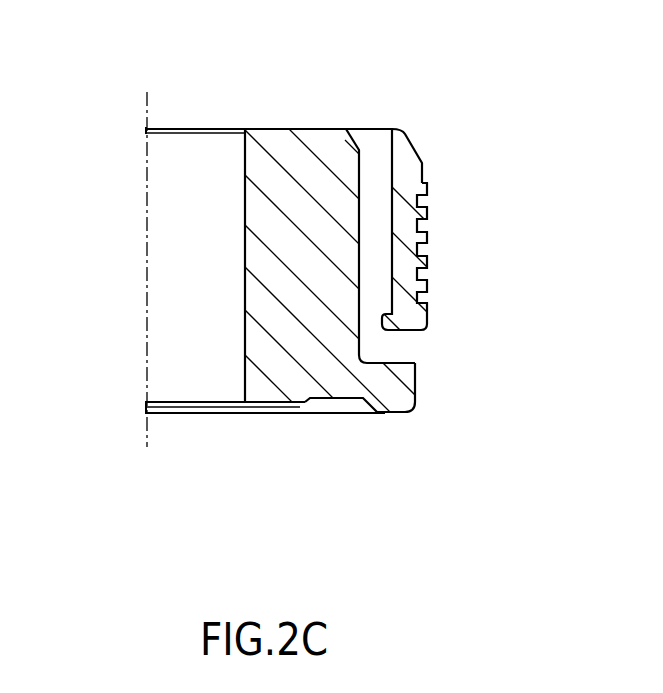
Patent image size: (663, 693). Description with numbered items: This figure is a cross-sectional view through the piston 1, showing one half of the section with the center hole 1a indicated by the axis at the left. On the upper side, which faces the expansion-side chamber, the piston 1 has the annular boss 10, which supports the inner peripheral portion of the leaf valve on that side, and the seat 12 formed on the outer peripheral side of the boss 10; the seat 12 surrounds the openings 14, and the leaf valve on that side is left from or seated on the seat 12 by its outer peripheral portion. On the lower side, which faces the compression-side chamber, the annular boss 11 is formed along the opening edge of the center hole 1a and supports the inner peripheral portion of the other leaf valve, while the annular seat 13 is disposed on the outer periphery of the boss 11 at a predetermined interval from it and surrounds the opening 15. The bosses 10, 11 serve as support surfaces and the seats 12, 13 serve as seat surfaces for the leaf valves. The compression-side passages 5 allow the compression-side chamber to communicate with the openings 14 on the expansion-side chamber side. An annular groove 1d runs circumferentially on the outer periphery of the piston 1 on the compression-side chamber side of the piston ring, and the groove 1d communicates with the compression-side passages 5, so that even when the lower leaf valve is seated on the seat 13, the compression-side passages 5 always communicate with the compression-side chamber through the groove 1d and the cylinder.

The piston 1 is at (297, 271).
The center hole 1a is at (173, 283).
The annular groove 1d is at (380, 348).
The compression-side passages 5 is at (372, 278).
The annular boss 10 is at (270, 128).
The annular boss 11 is at (262, 413).
The seat 12 is at (429, 175).
The seat 13 is at (395, 413).
The openings 14 is at (368, 138).
The opening 15 is at (340, 403).